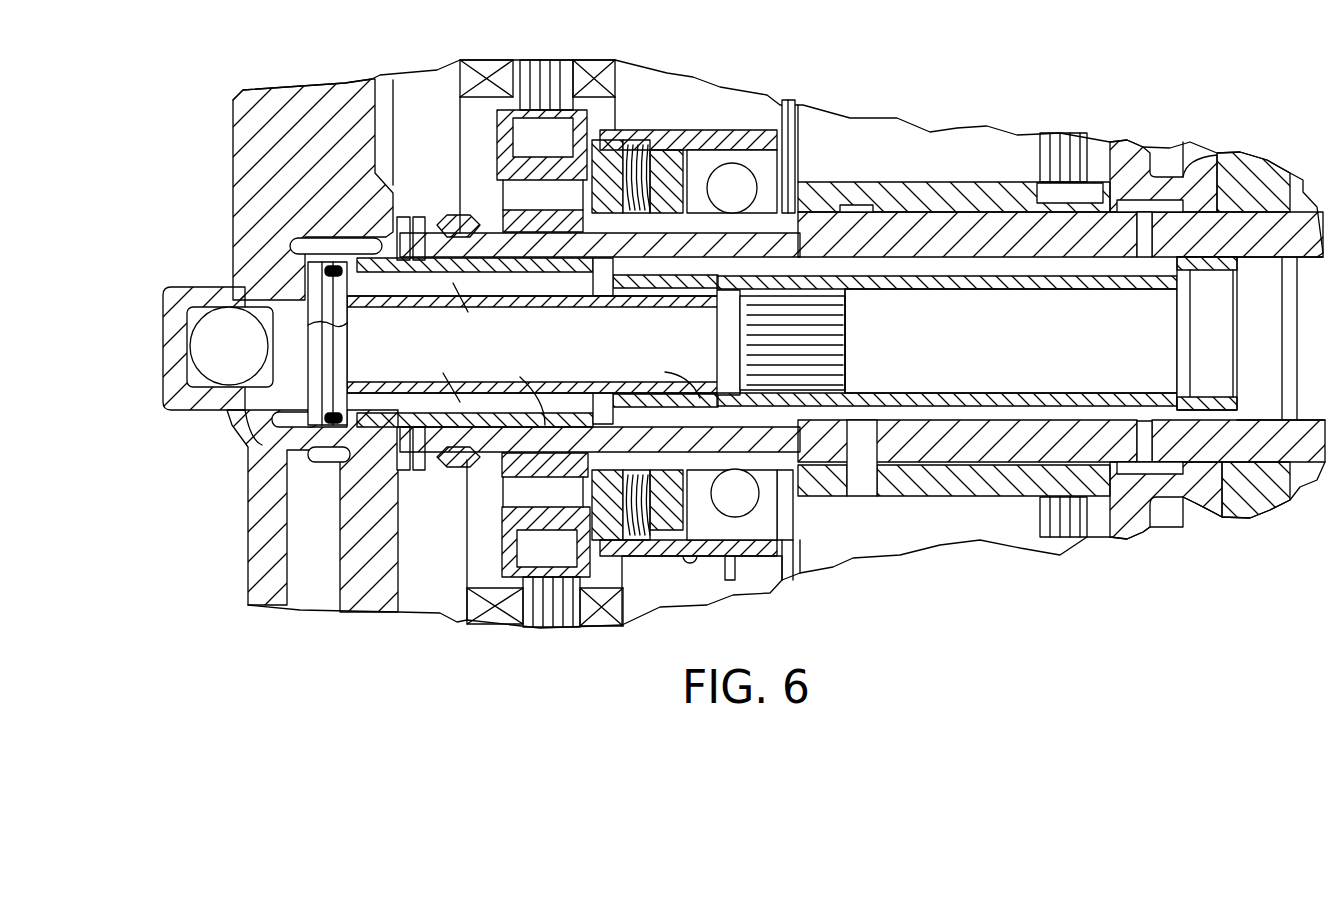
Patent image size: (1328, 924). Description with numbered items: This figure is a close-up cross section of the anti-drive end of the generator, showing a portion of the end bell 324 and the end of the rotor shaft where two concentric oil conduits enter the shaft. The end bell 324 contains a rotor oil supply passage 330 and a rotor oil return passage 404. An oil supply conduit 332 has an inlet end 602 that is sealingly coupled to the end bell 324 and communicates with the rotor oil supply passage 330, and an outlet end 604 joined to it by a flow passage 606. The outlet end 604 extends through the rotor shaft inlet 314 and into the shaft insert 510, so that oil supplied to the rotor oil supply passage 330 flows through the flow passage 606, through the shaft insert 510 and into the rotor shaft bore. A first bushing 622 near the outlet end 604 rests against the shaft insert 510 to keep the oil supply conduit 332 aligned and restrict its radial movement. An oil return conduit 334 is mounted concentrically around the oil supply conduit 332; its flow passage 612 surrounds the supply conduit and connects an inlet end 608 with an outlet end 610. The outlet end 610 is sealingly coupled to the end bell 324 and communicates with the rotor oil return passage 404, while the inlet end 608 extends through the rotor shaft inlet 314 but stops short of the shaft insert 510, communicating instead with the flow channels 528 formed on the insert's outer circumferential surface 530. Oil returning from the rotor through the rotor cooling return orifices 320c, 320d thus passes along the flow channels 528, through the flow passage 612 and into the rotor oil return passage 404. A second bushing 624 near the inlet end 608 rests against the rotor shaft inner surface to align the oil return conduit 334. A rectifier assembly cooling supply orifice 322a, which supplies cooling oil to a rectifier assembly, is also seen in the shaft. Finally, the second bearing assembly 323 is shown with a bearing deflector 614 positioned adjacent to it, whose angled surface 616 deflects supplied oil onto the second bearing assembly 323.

The end bell 324 is at (233, 130).
The oil return conduit 334 is at (370, 215).
The inlet 314 is at (440, 228).
The bearing deflector 614 is at (660, 135).
The angled surface 616 is at (700, 165).
The second bearing assembly 323 is at (775, 150).
The outer circumferential surface 530 is at (980, 210).
The inlet end 608 is at (592, 282).
The rotor oil supply passage 330 is at (192, 348).
The inlet end 602 is at (336, 325).
The flow passage 612 is at (457, 342).
The second bushing 624 is at (517, 385).
The flow passage 606 is at (602, 350).
The outlet end 604 is at (737, 343).
The first bushing 622 is at (660, 373).
The flow channels 528 is at (887, 267).
The shaft insert 510 is at (960, 289).
The rotor cooling return orifice 320c is at (1143, 243).
The rotor cooling return orifice 320d is at (1145, 433).
The rectifier assembly cooling supply orifice 322a is at (862, 490).
The outlet end 610 is at (393, 462).
The rotor oil return passage 404 is at (318, 582).
The oil supply conduit 332 is at (262, 442).